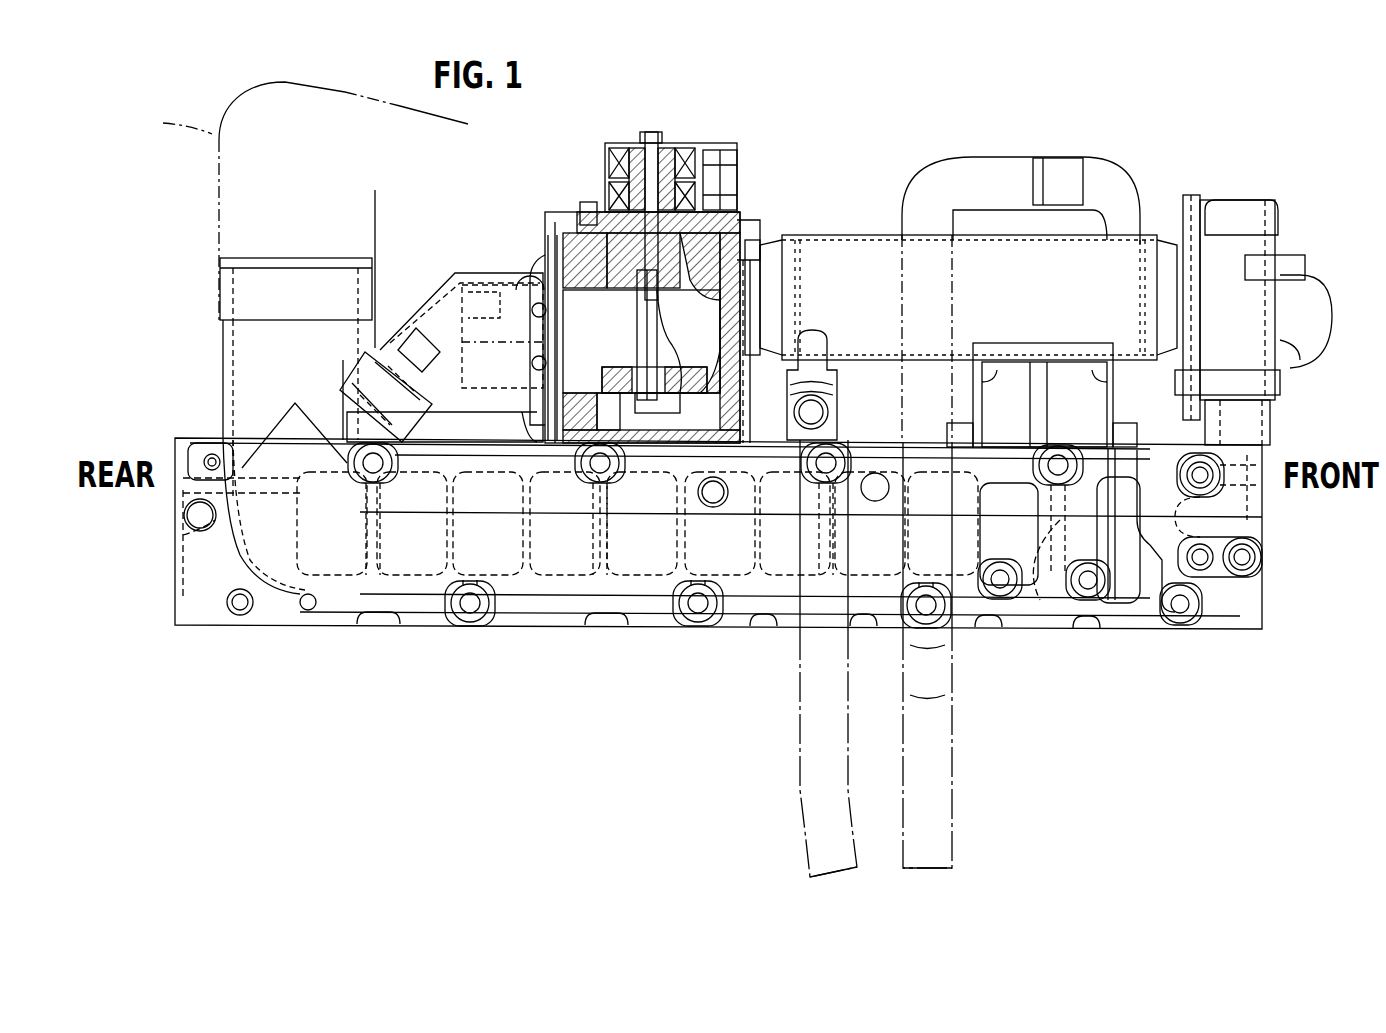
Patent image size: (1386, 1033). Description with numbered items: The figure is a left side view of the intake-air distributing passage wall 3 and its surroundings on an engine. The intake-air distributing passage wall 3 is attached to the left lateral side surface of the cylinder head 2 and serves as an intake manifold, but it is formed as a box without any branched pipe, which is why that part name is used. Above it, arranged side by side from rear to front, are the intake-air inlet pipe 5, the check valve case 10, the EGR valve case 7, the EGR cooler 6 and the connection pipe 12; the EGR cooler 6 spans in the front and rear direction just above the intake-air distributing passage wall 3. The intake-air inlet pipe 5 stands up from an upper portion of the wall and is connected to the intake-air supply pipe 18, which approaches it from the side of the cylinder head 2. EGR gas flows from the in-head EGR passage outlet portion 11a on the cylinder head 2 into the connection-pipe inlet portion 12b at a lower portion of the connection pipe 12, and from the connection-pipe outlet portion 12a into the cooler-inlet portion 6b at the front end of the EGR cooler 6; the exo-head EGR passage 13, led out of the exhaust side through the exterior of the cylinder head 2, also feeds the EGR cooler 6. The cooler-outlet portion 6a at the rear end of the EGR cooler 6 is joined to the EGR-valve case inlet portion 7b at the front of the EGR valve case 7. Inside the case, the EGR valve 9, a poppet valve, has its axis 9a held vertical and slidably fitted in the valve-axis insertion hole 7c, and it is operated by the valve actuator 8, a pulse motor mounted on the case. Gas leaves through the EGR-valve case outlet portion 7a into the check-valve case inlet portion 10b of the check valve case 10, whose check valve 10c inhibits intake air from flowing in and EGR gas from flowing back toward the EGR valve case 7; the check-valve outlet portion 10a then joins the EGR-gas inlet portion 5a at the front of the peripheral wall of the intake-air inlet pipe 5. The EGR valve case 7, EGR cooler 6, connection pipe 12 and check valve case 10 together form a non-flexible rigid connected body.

The cylinder head 2 is at (1152, 640).
The intake-air distributing passage wall 3 is at (1033, 550).
The intake-air inlet pipe 5 is at (262, 343).
The EGR-gas inlet portion 5a is at (355, 385).
The EGR cooler 6 is at (873, 253).
The cooler-outlet portion 6a is at (768, 240).
The cooler-inlet portion 6b is at (1150, 217).
The EGR valve case 7 is at (588, 212).
The EGR-valve case outlet portion 7a is at (560, 275).
The EGR-valve case inlet portion 7b is at (740, 235).
The valve-axis insertion hole 7c is at (660, 330).
The valve actuator 8 is at (670, 165).
The EGR valve 9 is at (640, 352).
The axis 9a is at (637, 315).
The check valve case 10 is at (432, 332).
The check-valve outlet portion 10a is at (296, 349).
The check-valve case inlet portion 10b is at (530, 330).
The check valve 10c is at (375, 223).
The in-head EGR passage outlet portion 11a is at (1235, 582).
The connection pipe 12 is at (1240, 428).
The connection-pipe outlet portion 12a is at (1190, 263).
The connection-pipe inlet portion 12b is at (1208, 517).
The exo-head EGR passage 13 is at (1300, 360).
The intake-air supply pipe 18 is at (275, 157).